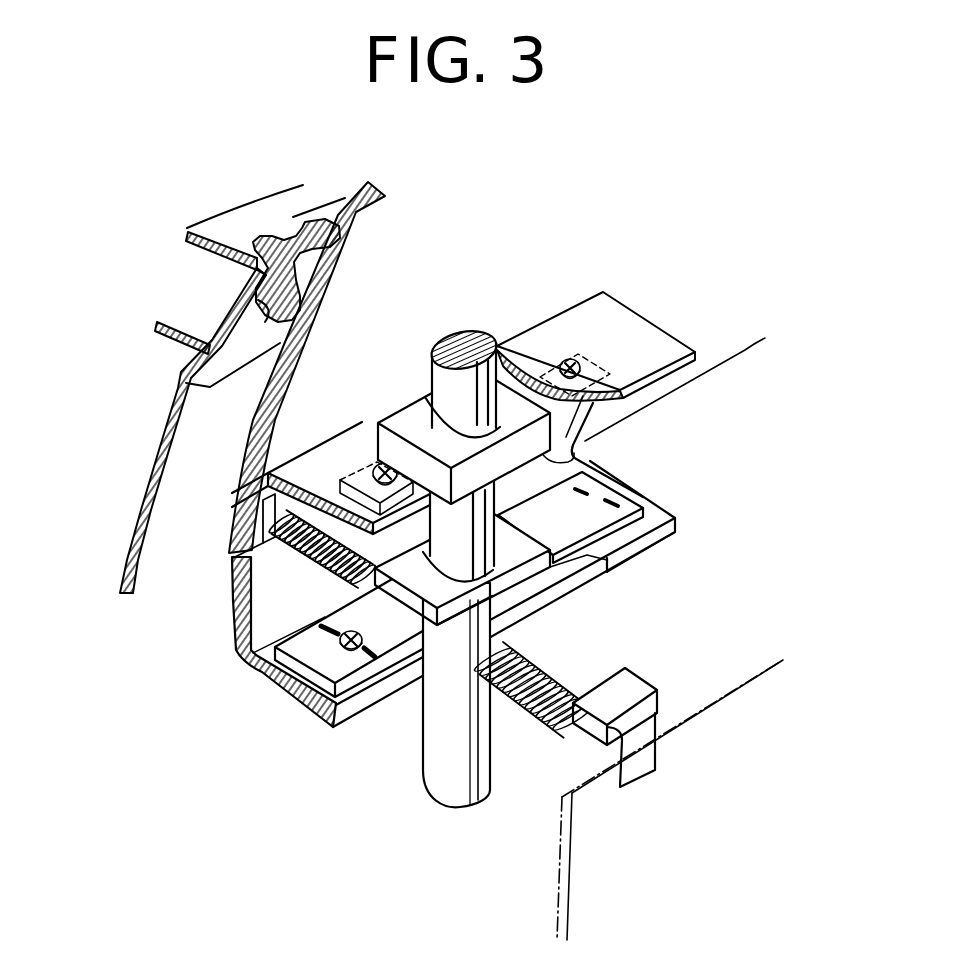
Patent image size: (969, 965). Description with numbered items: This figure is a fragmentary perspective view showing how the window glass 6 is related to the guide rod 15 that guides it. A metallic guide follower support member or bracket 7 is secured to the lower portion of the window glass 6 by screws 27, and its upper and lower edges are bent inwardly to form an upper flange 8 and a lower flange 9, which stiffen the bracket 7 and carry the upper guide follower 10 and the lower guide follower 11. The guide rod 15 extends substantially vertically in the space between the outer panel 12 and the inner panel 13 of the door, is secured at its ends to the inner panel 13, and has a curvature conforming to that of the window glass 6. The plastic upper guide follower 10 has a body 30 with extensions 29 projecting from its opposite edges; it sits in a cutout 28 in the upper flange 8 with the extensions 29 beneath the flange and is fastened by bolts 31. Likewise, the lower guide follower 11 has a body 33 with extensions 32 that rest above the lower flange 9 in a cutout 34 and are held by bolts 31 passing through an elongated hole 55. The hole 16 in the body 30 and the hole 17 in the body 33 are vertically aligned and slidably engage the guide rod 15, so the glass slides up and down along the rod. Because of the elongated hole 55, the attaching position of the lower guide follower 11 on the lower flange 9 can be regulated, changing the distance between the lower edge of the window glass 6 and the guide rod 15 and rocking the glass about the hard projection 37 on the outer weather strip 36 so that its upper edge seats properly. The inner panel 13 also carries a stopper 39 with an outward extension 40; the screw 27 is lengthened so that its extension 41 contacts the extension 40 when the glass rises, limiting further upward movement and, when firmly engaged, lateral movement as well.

The window glass 6 is at (358, 228).
The guide follower support member or bracket 7 is at (547, 322).
The upper flange 8 is at (625, 328).
The lower flange 9 is at (273, 690).
The upper guide follower 10 is at (577, 460).
The lower guide follower 11 is at (485, 630).
The outer panel 12 is at (130, 537).
The inner panel 13 is at (752, 672).
The guide rod 15 is at (473, 757).
The hole 16 is at (428, 412).
The hole 17 is at (480, 612).
The screw 27 is at (278, 560).
The cutout 28 is at (373, 423).
The extension 29 is at (605, 428).
The body 30 is at (507, 403).
The bolt 31 is at (573, 358).
The extension 32 is at (343, 688).
The body 33 is at (570, 583).
The cutout 34 is at (587, 567).
The outer weather strip 36 is at (293, 227).
The hard projection 37 is at (232, 308).
The stopper 39 is at (643, 762).
The outward extension 40 is at (633, 687).
The extension 41 is at (517, 700).
The elongated hole 55 is at (330, 625).